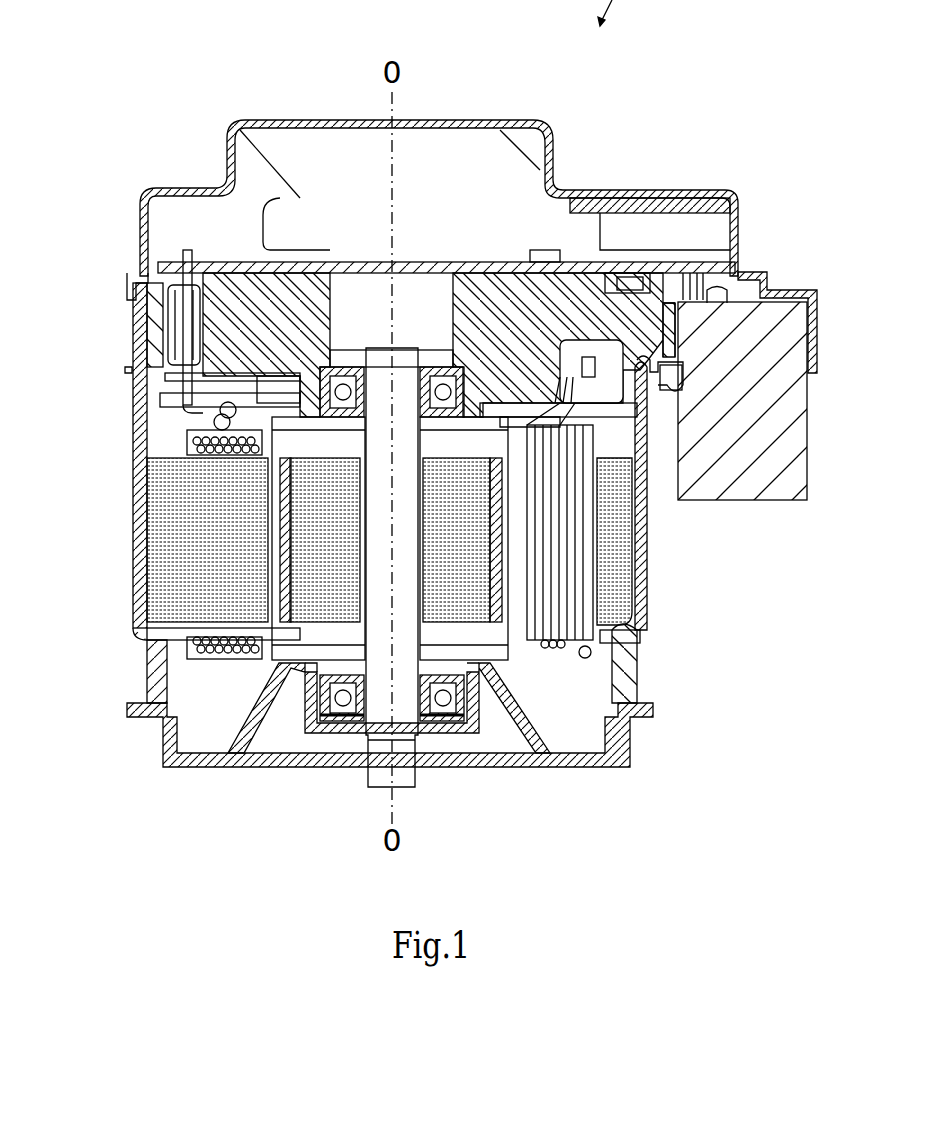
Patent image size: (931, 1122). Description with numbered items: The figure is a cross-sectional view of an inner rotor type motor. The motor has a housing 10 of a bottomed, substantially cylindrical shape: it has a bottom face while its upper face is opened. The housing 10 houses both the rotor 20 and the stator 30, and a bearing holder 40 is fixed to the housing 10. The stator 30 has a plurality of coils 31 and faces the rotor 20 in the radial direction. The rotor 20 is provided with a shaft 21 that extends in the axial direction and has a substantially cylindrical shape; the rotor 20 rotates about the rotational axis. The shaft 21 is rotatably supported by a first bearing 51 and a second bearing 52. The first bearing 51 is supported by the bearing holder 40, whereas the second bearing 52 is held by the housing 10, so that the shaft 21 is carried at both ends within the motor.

The housing 10 is at (131, 577).
The rotor 20 is at (288, 633).
The shaft 21 is at (380, 745).
The stator 30 is at (650, 573).
The coils 31 is at (638, 633).
The bearing holder 40 is at (260, 287).
The first bearing 51 is at (470, 367).
The second bearing 52 is at (433, 720).